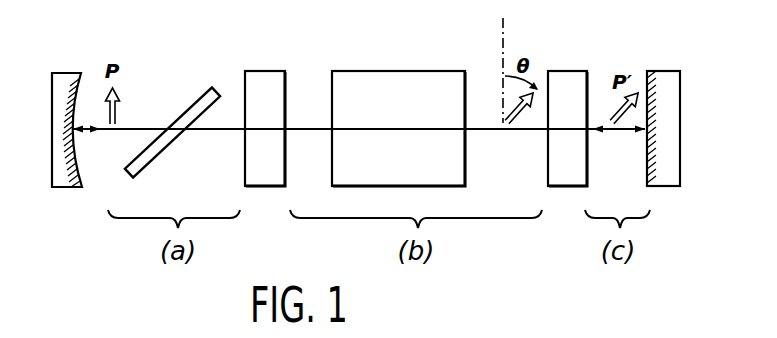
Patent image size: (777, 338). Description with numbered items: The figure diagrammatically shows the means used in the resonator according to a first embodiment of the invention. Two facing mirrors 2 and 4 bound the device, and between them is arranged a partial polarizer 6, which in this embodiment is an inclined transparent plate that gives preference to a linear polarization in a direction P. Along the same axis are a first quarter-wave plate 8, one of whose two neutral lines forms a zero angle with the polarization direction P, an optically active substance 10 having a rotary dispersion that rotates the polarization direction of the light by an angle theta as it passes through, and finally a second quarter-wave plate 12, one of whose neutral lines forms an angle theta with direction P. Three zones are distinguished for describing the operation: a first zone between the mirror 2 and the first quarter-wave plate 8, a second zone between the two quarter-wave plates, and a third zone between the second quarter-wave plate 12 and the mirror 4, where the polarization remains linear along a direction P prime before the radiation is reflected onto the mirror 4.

The mirror 2 is at (63, 80).
The mirror 4 is at (667, 82).
The partial polarizer 6 is at (195, 100).
The first quarter-wave plate 8 is at (258, 92).
The optically active substance 10 is at (397, 85).
The second quarter-wave plate 12 is at (568, 87).